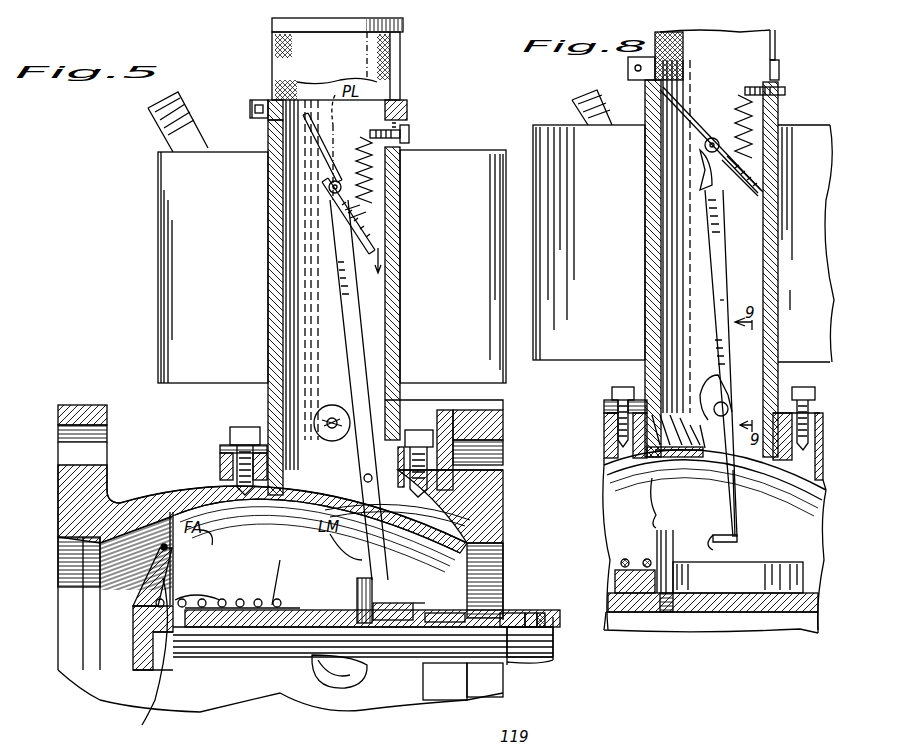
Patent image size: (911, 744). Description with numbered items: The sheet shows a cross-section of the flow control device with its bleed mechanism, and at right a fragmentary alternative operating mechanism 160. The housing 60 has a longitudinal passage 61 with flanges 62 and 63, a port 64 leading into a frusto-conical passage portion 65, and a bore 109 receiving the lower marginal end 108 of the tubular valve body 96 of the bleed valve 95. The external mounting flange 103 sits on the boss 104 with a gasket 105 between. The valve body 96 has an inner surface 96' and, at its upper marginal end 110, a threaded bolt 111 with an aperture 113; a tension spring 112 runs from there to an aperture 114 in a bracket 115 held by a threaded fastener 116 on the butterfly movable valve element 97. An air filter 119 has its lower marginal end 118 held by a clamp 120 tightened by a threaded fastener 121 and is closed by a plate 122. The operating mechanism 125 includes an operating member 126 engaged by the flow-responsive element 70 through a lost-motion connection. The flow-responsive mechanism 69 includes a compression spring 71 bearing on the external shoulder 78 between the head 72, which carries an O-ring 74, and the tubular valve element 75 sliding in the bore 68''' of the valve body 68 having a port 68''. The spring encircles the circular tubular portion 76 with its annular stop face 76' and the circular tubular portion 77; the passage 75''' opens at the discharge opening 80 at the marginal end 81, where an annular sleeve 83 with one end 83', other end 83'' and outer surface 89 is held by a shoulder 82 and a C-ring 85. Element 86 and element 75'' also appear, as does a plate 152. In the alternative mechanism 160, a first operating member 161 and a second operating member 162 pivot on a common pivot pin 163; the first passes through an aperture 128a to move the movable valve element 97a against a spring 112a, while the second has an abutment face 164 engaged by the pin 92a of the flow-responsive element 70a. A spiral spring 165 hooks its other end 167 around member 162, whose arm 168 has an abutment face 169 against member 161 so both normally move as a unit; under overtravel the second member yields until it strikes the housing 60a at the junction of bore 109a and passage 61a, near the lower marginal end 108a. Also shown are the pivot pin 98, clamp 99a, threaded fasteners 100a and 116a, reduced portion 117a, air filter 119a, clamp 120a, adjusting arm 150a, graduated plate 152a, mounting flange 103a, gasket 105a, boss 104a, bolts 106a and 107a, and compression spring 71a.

In FIG. 5, the plate 122 is at (350, 22).
In FIG. 5, the air filter 119 is at (395, 62).
In FIG. 5, the lower marginal end 118 is at (275, 95).
In FIG. 5, the threaded fastener 121 is at (250, 109).
In FIG. 5, the clamp 120 is at (260, 118).
In FIG. 5, the threaded fastener 116 is at (300, 105).
In FIG. 5, the aperture 113 is at (368, 130).
In FIG. 5, the movable valve element 97 is at (328, 140).
In FIG. 5, the aperture 114 is at (352, 170).
In FIG. 5, the threaded bolt 111 is at (409, 130).
In FIG. 5, the upper marginal end 110 is at (407, 114).
In FIG. 5, the tension spring 112 is at (400, 128).
In FIG. 5, the bracket 115 is at (380, 215).
In FIG. 5, the valve body 96 is at (420, 293).
In FIG. 5, the inner surface 96' is at (413, 260).
In FIG. 5, the plate 152 is at (327, 237).
In FIG. 5, the bleed valve 95 is at (268, 326).
In FIG. 5, the operating member 126 is at (300, 348).
In FIG. 5, the operating mechanism 125 is at (377, 366).
In FIG. 5, the flange 62 is at (55, 405).
In FIG. 5, the boss 104 is at (222, 430).
In FIG. 5, the external mounting flange 103 is at (230, 430).
In FIG. 5, the gasket 105 is at (440, 440).
In FIG. 5, the housing 60 is at (160, 490).
In FIG. 5, the frusto-conical passage portion 65 is at (128, 534).
In FIG. 5, the longitudinal passage 61 is at (203, 500).
In FIG. 5, the flange 63 is at (490, 482).
In FIG. 5, the lower marginal end 108 is at (380, 465).
In FIG. 5, the bore 109 is at (317, 539).
In FIG. 5, the port 64 is at (85, 565).
In FIG. 5, the O-ring 74 is at (175, 545).
In FIG. 5, the flow-responsive mechanism 69 is at (222, 596).
In FIG. 5, the circular tubular portion 76 is at (218, 573).
In FIG. 5, the compression spring 71 is at (284, 577).
In FIG. 5, the annular stop face 76' is at (248, 588).
In FIG. 5, the passage 75''' is at (341, 592).
In FIG. 5, the valve body 68 is at (395, 585).
In FIG. 5, the bore 68''' is at (440, 578).
In FIG. 5, the plate 86 is at (425, 615).
In FIG. 5, the one end 83' is at (502, 567).
In FIG. 5, the outer surface 89 is at (498, 590).
In FIG. 5, the annular sleeve 83 is at (520, 599).
In FIG. 5, the other end 83'' is at (549, 604).
In FIG. 5, the C-ring 85 is at (545, 618).
In FIG. 5, the flow-responsive element 70 is at (122, 604).
In FIG. 5, the external shoulder 78 is at (150, 628).
In FIG. 5, the head 72 is at (145, 650).
In FIG. 5, the tubular valve element 75 is at (363, 668).
In FIG. 5, the circular tubular portion 77 is at (147, 658).
In FIG. 5, the base 75'' is at (280, 701).
In FIG. 5, the port 68'' is at (355, 672).
In FIG. 5, the marginal end 81 is at (553, 655).
In FIG. 5, the external annular shoulder 82 is at (507, 635).
In FIG. 5, the discharge opening 80 is at (560, 665).
In FIG. 8, the reduced portion 117a is at (685, 62).
In FIG. 8, the air filter 119a is at (776, 38).
In FIG. 8, the clamp 120a is at (784, 66).
In FIG. 8, the plate 152a is at (563, 125).
In FIG. 8, the adjusting arm 150a is at (607, 105).
In FIG. 8, the threaded fastener 100a is at (710, 120).
In FIG. 8, the spring 112a is at (778, 108).
In FIG. 8, the movable valve element 97a is at (700, 125).
In FIG. 8, the pivot pin 98 is at (720, 135).
In FIG. 8, the clamp 99a is at (700, 160).
In FIG. 8, the threaded fastener 116a is at (755, 178).
In FIG. 8, the aperture 128a is at (734, 363).
In FIG. 8, the first operating member 161 is at (723, 262).
In FIG. 8, the operating mechanism 160 is at (735, 303).
In FIG. 8, the spiral spring 165 is at (745, 360).
In FIG. 8, the abutment face 169 is at (705, 375).
In FIG. 8, the arm 168 is at (700, 400).
In FIG. 8, the pivot pin 163 is at (712, 415).
In FIG. 8, the bolt 106a is at (620, 395).
In FIG. 8, the external mounting flange 103a is at (610, 400).
In FIG. 8, the gasket 105a is at (604, 410).
In FIG. 8, the boss 104a is at (604, 435).
In FIG. 8, the bolt 107a is at (805, 395).
In FIG. 8, the housing 60a is at (605, 470).
In FIG. 8, the passage 61a is at (608, 482).
In FIG. 8, the bore 109a is at (765, 480).
In FIG. 8, the pin 92a is at (714, 547).
In FIG. 8, the other end 167 is at (665, 460).
In FIG. 8, the lower marginal end 108a is at (697, 466).
In FIG. 8, the second operating member 162 is at (728, 495).
In FIG. 8, the abutment face 164 is at (718, 548).
In FIG. 8, the compression spring 71a is at (625, 556).
In FIG. 8, the flow-responsive element 70a is at (727, 626).